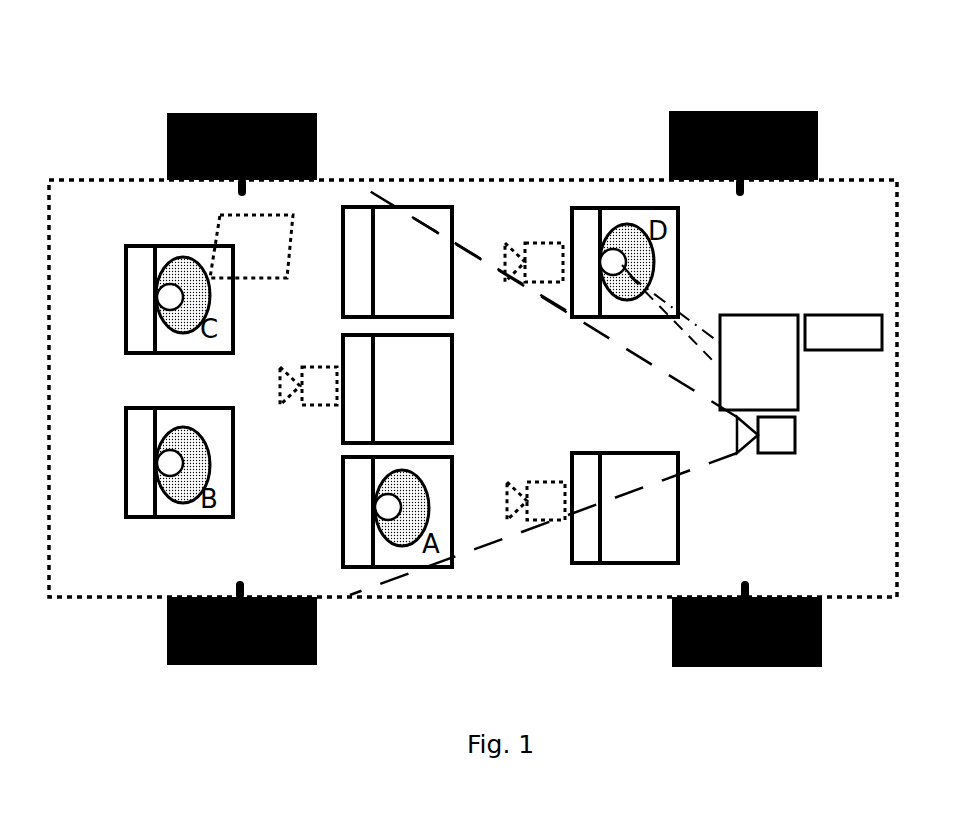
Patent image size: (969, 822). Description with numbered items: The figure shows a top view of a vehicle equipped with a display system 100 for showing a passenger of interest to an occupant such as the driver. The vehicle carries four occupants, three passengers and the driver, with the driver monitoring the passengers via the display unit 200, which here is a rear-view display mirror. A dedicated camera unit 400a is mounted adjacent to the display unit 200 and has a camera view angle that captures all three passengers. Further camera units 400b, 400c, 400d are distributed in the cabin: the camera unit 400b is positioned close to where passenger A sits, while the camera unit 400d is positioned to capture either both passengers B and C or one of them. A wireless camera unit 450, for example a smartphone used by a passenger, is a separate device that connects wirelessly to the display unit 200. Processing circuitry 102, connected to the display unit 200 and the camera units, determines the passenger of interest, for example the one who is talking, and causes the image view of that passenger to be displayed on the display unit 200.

The display system 100 is at (470, 143).
The processing circuitry 102 is at (843, 332).
The display unit 200 is at (759, 362).
The camera unit 400a is at (779, 472).
The camera unit 400b is at (522, 478).
The camera unit 400c is at (521, 240).
The camera unit 400d is at (306, 415).
The wireless camera unit 450 is at (251, 246).